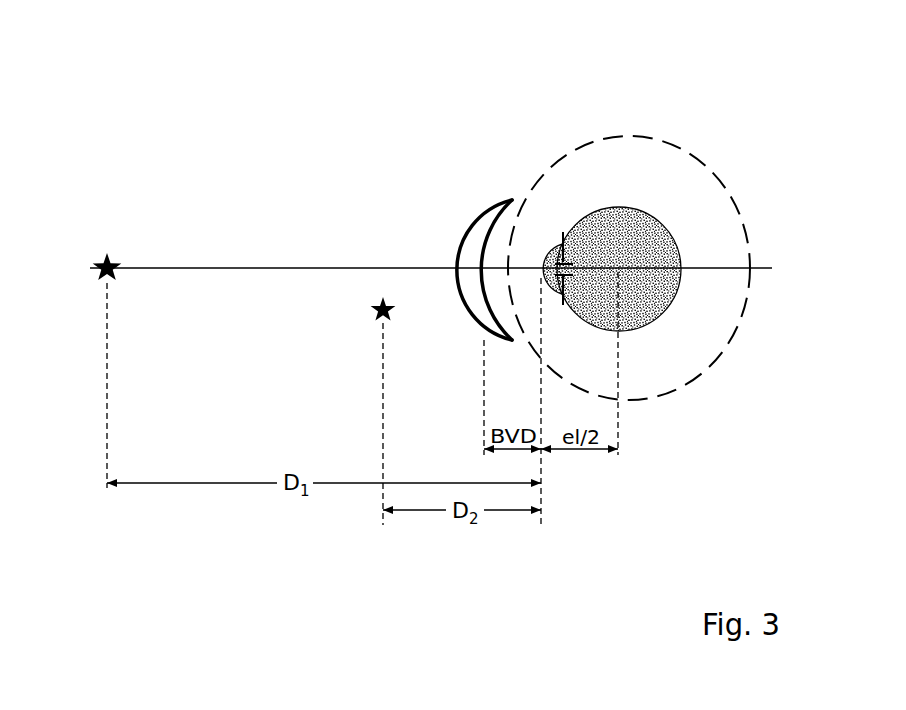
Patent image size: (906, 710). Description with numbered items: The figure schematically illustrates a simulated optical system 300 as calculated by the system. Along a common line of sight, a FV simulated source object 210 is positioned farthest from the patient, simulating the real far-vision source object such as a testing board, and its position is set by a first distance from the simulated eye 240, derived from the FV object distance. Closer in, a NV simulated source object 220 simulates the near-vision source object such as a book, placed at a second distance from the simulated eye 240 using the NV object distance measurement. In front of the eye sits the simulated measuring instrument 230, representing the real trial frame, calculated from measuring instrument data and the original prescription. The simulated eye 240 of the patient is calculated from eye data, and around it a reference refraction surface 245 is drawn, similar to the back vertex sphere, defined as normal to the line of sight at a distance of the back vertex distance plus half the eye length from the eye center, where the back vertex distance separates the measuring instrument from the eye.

The FV simulated source object 210 is at (106, 252).
The NV simulated source object 220 is at (377, 318).
The simulated measuring instrument 230 is at (468, 228).
The simulated eye 240 is at (653, 247).
The reference refraction surface 245 is at (698, 160).
The simulated optical system 300 is at (680, 121).